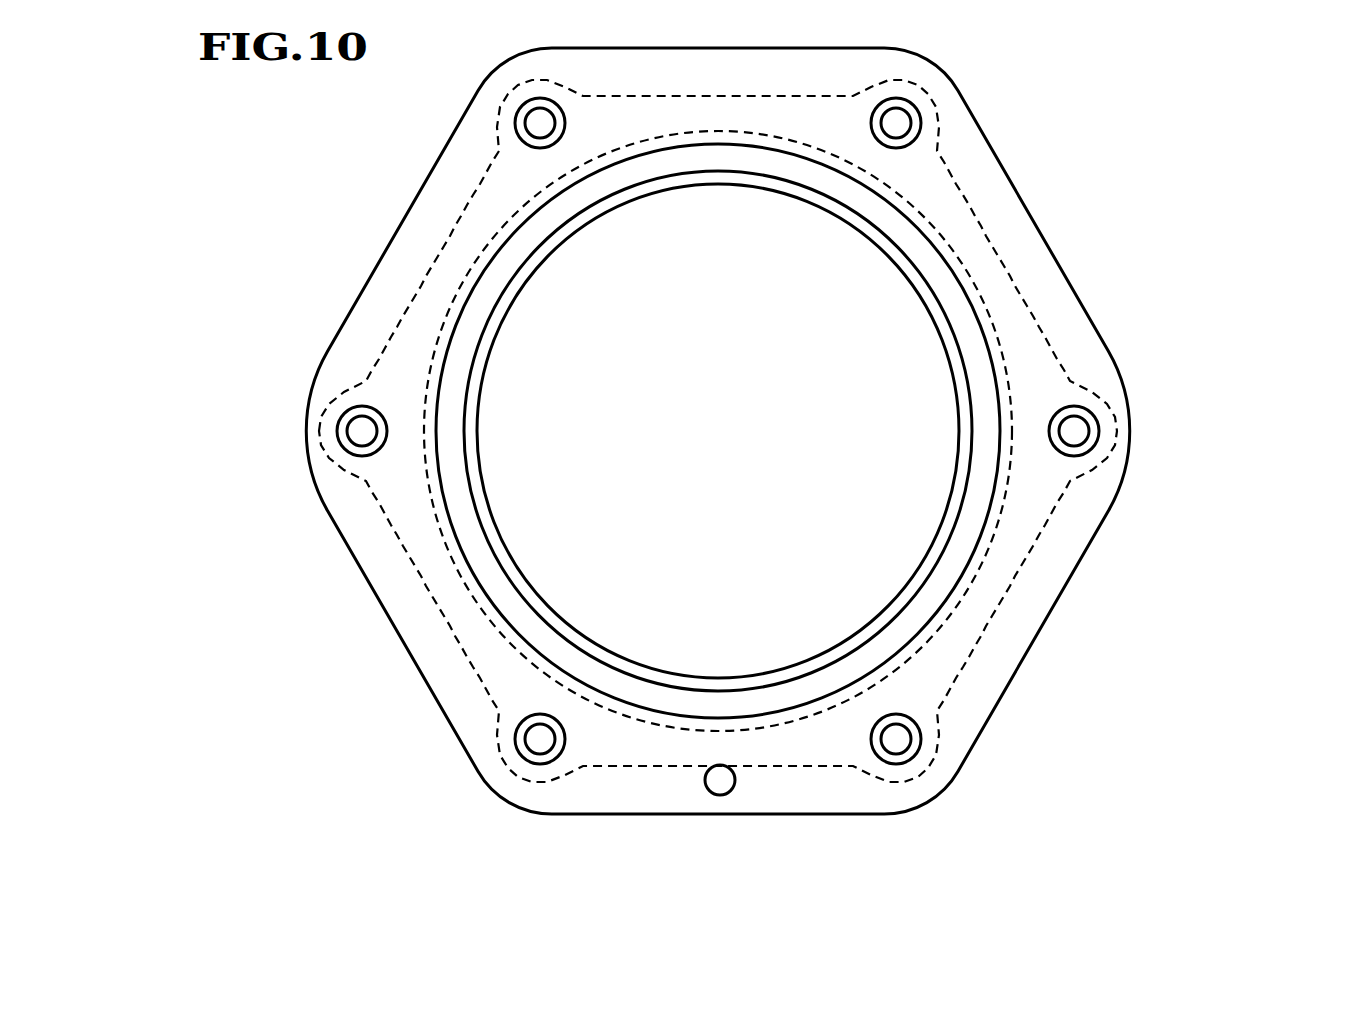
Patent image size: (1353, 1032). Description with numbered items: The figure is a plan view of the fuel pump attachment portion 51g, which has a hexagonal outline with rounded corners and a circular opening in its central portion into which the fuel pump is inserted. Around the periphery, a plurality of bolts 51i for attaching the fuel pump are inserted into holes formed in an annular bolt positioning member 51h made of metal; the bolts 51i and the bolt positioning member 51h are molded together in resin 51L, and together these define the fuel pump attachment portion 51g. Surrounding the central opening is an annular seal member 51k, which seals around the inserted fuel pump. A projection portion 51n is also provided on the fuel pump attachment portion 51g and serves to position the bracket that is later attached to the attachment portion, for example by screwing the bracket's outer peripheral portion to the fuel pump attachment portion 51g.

The fuel pump attachment portion 51g is at (1122, 385).
The bolts 51i is at (1097, 432).
The bolt positioning member 51h is at (1027, 552).
The resin 51L is at (1040, 592).
The seal member 51k is at (930, 598).
The projection portion 51n is at (733, 789).